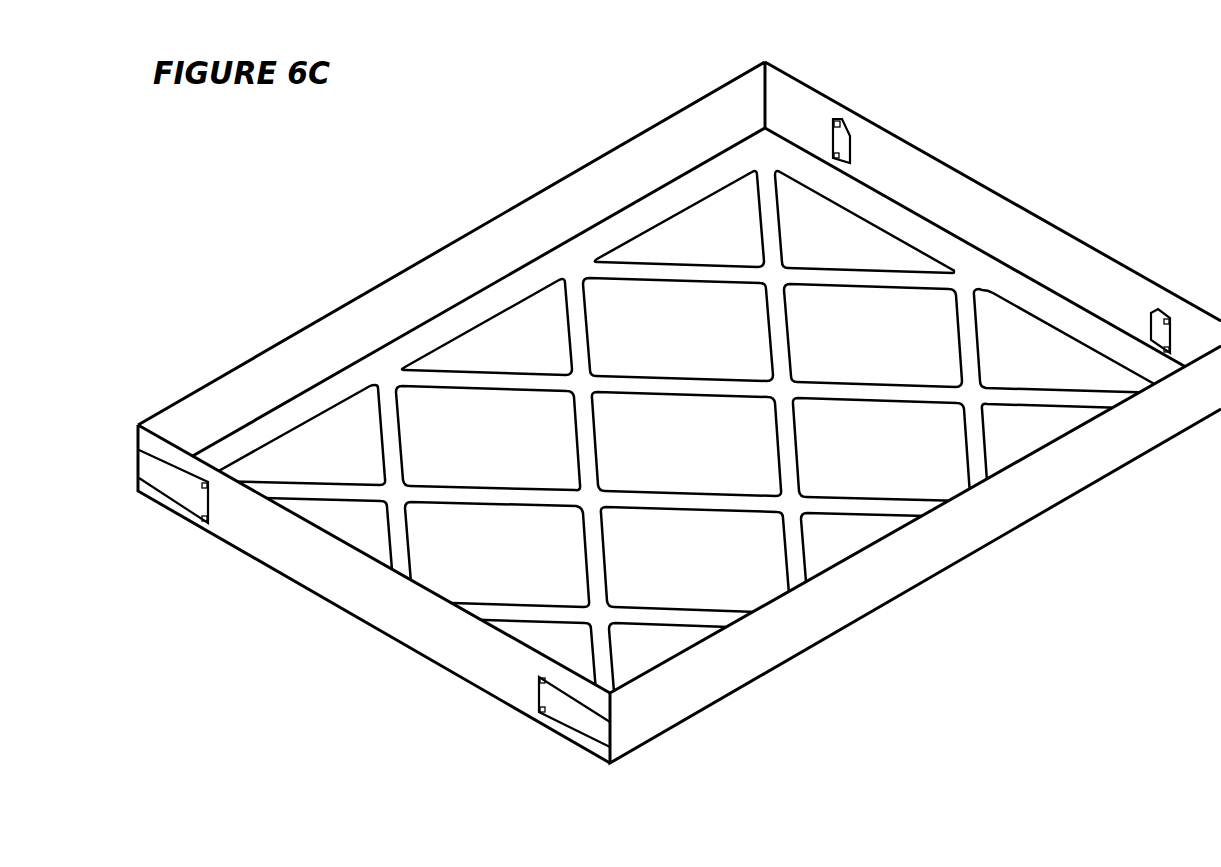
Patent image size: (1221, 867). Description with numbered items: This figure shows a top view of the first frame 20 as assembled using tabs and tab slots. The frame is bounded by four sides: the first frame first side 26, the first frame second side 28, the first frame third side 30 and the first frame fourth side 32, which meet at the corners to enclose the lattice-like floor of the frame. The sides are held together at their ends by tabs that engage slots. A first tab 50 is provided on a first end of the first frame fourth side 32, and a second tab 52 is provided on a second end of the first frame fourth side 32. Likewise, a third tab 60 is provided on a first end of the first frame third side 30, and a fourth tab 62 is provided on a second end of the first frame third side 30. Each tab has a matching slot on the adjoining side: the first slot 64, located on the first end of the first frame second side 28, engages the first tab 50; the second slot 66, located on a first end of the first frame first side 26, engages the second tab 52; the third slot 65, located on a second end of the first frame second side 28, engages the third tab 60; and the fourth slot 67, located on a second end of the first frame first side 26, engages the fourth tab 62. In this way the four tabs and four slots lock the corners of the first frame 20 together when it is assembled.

The filter frame assembly 20 is at (1114, 116).
The first frame first side 26 is at (1018, 206).
The first frame second side 28 is at (365, 608).
The first frame third side 30 is at (924, 567).
The first frame fourth side 32 is at (424, 259).
The first tab 50 is at (165, 483).
The second tab 52 is at (855, 150).
The third tab 60 is at (575, 720).
The fourth tab 62 is at (1151, 318).
The first slot 64 is at (204, 524).
The third slot 65 is at (540, 712).
The second slot 66 is at (833, 119).
The fourth slot 67 is at (1167, 316).